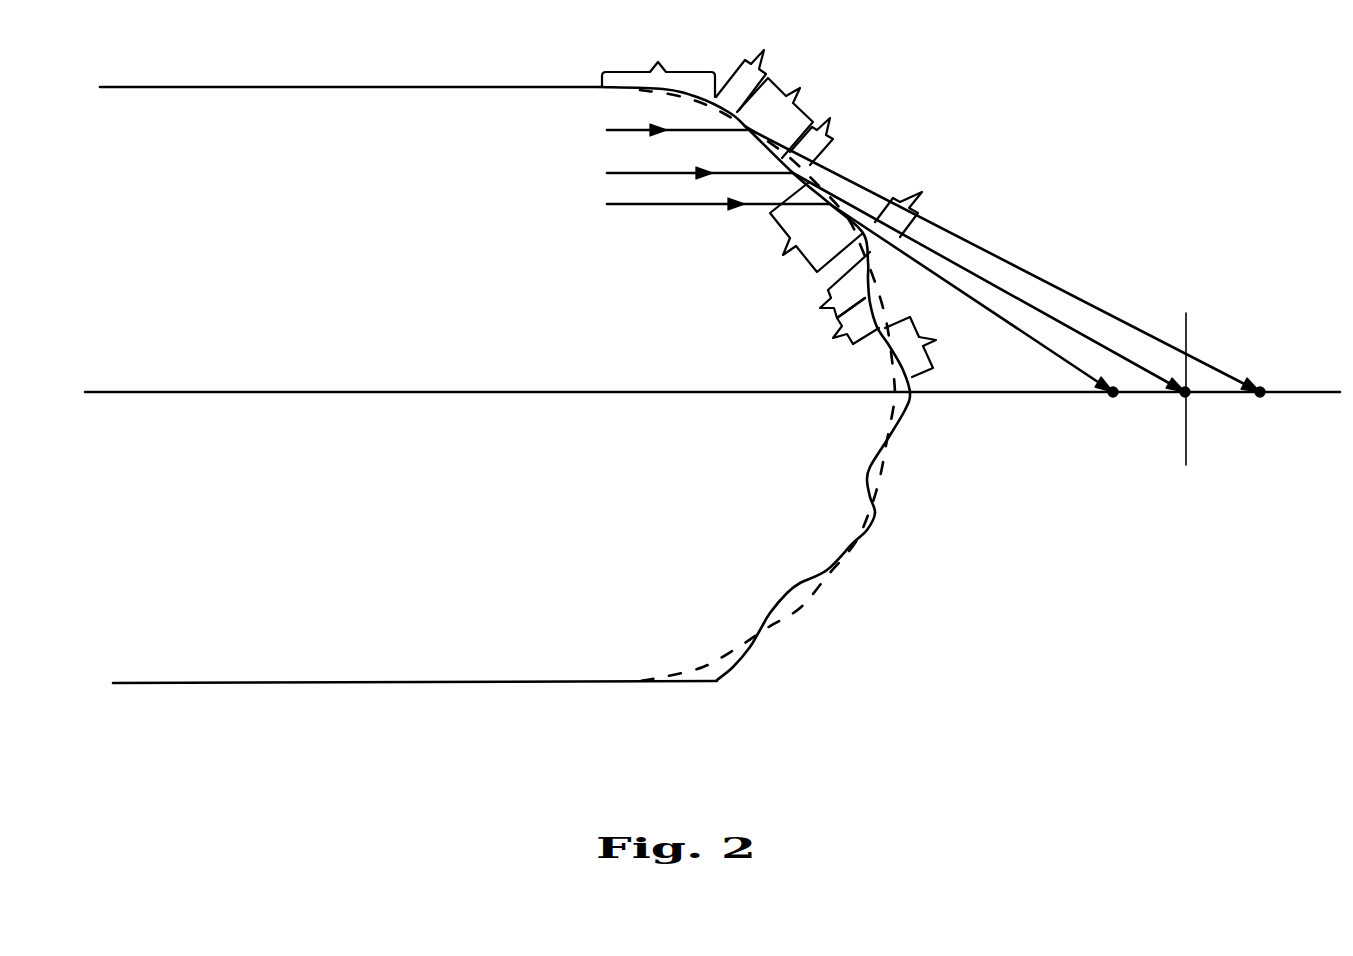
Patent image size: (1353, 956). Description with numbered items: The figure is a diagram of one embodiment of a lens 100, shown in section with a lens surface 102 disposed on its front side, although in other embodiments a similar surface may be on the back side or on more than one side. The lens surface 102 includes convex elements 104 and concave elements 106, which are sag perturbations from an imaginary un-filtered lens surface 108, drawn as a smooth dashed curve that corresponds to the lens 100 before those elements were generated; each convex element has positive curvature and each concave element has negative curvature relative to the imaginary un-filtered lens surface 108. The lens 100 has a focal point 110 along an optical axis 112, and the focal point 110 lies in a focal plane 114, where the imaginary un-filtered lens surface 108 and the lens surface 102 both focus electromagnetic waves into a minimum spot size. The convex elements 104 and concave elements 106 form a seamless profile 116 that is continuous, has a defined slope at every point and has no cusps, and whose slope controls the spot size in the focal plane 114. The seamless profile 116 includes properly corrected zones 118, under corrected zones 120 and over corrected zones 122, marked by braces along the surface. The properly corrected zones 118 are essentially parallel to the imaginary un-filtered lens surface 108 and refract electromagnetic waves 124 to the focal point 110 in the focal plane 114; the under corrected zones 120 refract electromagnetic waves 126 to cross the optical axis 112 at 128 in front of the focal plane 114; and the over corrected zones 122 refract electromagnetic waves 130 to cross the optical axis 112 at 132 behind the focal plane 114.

The lens 100 is at (448, 86).
The lens surface 102 is at (718, 681).
The convex elements 104 is at (877, 515).
The concave elements 106 is at (777, 593).
The imaginary un-filtered lens surface 108 is at (790, 607).
The focal point 110 is at (1192, 386).
The optical axis 112 is at (373, 393).
The focal plane 114 is at (1188, 440).
The seamless profile 116 is at (914, 411).
The properly corrected zones 118 is at (845, 195).
The under corrected zones 120 is at (799, 201).
The over corrected zones 122 is at (803, 197).
The refracted electromagnetic waves 124 is at (1068, 326).
The electromagnetic waves 126 is at (1000, 316).
The crossing point in front of focal plane 128 is at (1113, 395).
The electromagnetic waves 130 is at (1117, 318).
The crossing point behind focal plane 132 is at (1262, 397).